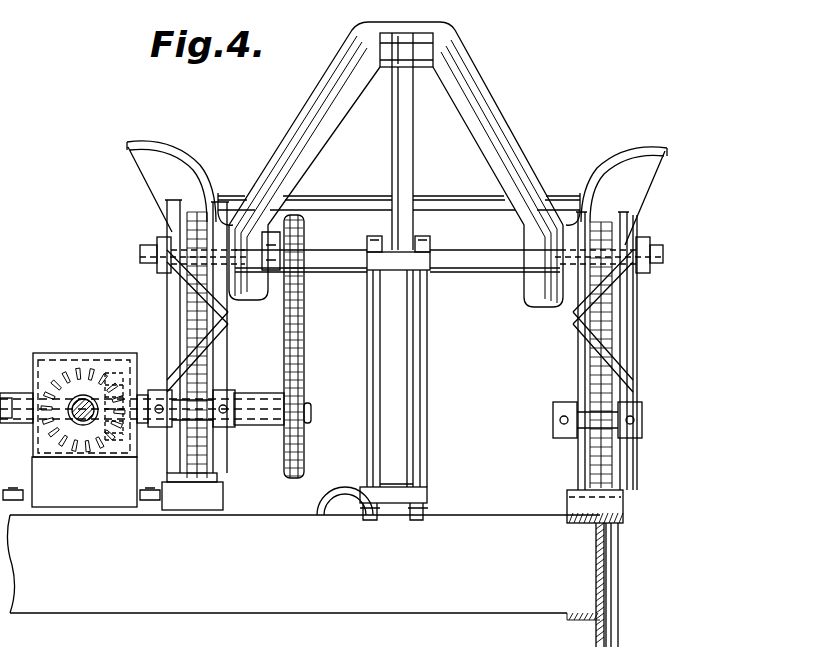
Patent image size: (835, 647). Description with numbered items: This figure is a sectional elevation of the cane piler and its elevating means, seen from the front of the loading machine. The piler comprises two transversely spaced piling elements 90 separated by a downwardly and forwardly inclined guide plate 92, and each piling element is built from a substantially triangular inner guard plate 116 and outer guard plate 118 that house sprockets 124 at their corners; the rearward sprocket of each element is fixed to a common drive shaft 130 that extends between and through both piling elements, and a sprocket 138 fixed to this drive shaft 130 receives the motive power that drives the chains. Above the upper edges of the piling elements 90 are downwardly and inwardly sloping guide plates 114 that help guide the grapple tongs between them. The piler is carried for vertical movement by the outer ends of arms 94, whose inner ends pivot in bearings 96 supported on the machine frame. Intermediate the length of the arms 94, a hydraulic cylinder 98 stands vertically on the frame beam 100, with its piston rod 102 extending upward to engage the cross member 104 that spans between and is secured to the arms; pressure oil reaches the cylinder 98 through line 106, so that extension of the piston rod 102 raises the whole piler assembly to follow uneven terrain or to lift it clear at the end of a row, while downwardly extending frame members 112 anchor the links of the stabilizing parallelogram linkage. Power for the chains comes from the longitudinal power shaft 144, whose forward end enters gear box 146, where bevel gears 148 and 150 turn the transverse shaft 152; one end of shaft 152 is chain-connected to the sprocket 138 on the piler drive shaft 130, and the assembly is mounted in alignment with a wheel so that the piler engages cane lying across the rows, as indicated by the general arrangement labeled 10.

The rail 10 is at (604, 590).
The piling element 90 is at (156, 216).
The guide plate 92 is at (492, 340).
The arm 94 is at (228, 330).
The bearing 96 is at (214, 400).
The hydraulic cylinder 98 is at (397, 426).
The frame beam 100 is at (515, 500).
The piston rod 102 is at (400, 158).
The cross member 104 is at (478, 122).
The line 106 is at (328, 505).
The frame member 112 is at (612, 620).
The guide plate 114 is at (180, 140).
The inner guard plate 116 is at (228, 212).
The outer guard plate 118 is at (175, 302).
The sprocket 124 is at (165, 262).
The drive shaft 130 is at (352, 268).
The sprocket 138 is at (300, 242).
The longitudinal power shaft 144 is at (83, 420).
The gear box 146 is at (55, 360).
The bevel gear 148 is at (86, 375).
The bevel gear 150 is at (110, 445).
The shaft 152 is at (306, 412).